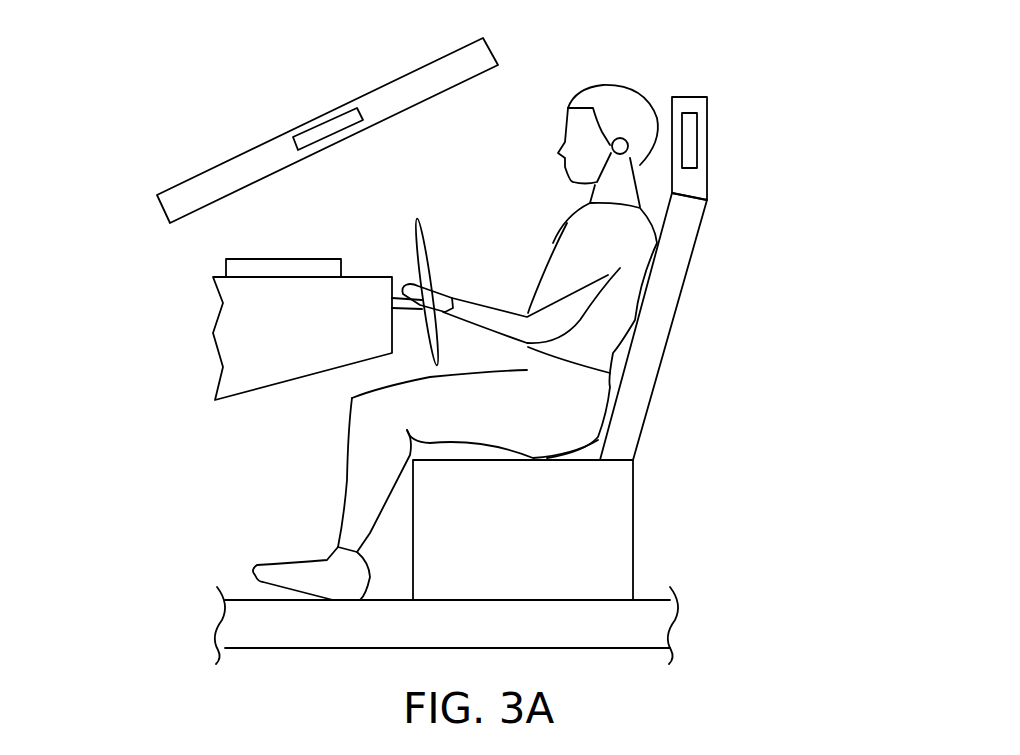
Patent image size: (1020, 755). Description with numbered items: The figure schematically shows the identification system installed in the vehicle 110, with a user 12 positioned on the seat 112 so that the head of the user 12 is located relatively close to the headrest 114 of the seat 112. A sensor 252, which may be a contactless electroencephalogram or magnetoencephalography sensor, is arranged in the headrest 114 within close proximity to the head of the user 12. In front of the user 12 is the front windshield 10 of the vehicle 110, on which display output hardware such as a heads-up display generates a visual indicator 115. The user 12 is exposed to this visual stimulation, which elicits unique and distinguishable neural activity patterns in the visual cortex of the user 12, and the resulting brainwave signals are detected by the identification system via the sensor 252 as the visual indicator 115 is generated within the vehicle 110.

The front windshield 10 is at (147, 222).
The visual indicator 115 is at (325, 133).
The user 12 is at (336, 462).
The vehicle 110 is at (654, 304).
The headrest 114 is at (751, 106).
The sensor 252 is at (694, 107).
The seat 112 is at (674, 343).